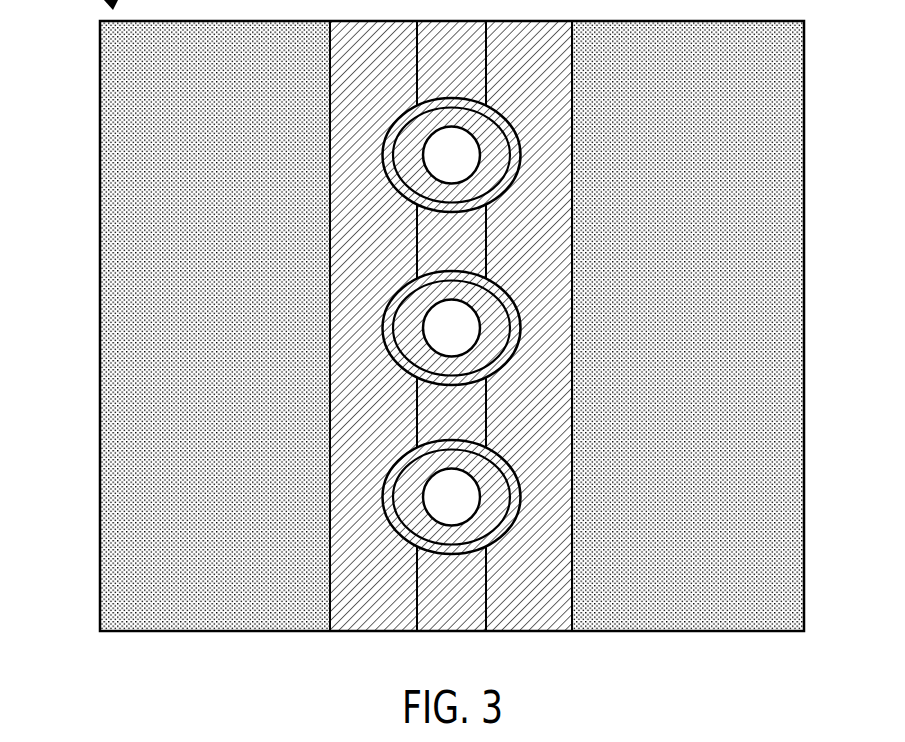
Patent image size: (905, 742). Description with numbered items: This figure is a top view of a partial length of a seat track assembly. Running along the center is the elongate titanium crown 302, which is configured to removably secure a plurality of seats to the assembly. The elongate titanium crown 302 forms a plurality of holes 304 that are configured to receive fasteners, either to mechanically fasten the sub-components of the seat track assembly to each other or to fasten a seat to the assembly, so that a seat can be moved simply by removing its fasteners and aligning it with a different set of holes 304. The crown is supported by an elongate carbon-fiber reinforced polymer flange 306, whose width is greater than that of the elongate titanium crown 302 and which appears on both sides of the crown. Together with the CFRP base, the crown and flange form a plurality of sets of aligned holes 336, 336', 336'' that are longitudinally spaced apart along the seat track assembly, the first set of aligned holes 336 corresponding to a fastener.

The elongate titanium crown 302 is at (387, 632).
The holes 304 is at (447, 487).
The elongate carbon-fiber reinforced polymer (CFRP) flange 306 is at (190, 632).
The first set of aligned holes 336 is at (471, 497).
The set of aligned holes 336' is at (433, 326).
The set of aligned holes 336'' is at (433, 153).